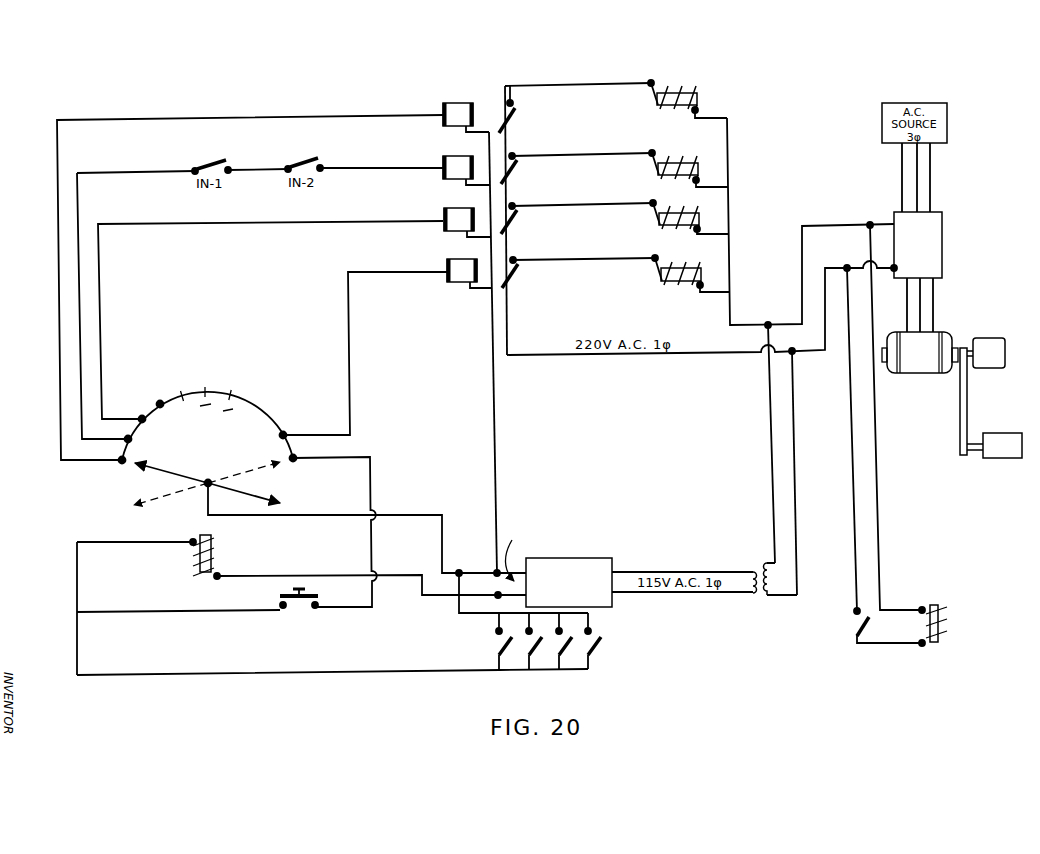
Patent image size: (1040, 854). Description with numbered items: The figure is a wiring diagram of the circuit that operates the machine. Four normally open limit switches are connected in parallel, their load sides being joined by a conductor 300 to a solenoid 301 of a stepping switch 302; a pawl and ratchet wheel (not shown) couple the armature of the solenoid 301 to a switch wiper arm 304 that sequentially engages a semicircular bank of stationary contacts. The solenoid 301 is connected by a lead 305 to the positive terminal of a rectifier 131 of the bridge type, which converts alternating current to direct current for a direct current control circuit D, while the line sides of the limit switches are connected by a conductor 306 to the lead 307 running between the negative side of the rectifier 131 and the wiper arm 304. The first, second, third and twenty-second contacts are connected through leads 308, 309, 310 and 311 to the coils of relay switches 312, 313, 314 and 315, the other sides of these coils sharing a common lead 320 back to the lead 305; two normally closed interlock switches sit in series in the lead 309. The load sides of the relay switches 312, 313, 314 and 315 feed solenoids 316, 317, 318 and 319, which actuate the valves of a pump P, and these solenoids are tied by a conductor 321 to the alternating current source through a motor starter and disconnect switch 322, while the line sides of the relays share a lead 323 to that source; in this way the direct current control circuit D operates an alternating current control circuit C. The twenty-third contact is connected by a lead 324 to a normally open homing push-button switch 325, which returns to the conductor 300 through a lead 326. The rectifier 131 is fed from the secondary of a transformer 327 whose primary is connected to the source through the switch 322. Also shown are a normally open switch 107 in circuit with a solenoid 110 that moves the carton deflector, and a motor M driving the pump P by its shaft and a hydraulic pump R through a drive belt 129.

The conductor 300 is at (300, 675).
The solenoid of stepping switch 301 is at (216, 556).
The stepping switch 302 is at (204, 491).
The switch wiper arm 304 is at (173, 471).
The lead 305 is at (279, 576).
The conductor 306 is at (470, 616).
The lead 307 is at (460, 572).
The lead 308 is at (59, 375).
The lead 309 is at (77, 327).
The lead 310 is at (98, 273).
The lead 311 is at (350, 342).
The relay switch 312 is at (448, 128).
The relay switch 313 is at (448, 181).
The relay switch 314 is at (449, 233).
The relay switch 315 is at (455, 285).
The solenoid 316 is at (665, 110).
The solenoid 317 is at (666, 177).
The solenoid 318 is at (666, 226).
The solenoid 319 is at (666, 283).
The lead 320 is at (492, 414).
The conductor 321 is at (731, 223).
The motor starter and disconnect switch 322 is at (935, 241).
The lead 323 is at (508, 323).
The lead 324 is at (371, 492).
The homing push-button switch 325 is at (322, 605).
The lead 326 is at (201, 613).
The transformer 327 is at (767, 597).
The rectifier 131 is at (583, 566).
The switch 107 is at (848, 630).
The solenoid 110 is at (948, 628).
The drive belt 129 is at (960, 430).
The direct current control circuit D is at (178, 114).
The alternating current control circuit C is at (715, 138).
The motor M is at (916, 368).
The pump P is at (990, 337).
The hydraulic pump R is at (1000, 433).